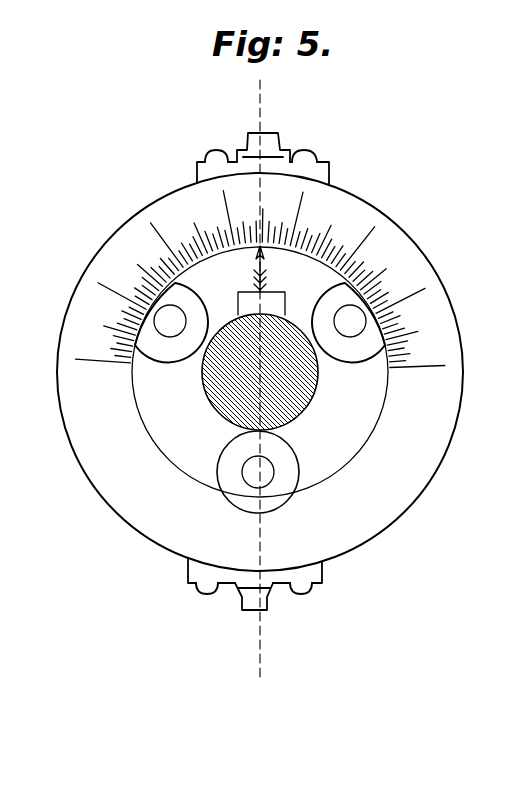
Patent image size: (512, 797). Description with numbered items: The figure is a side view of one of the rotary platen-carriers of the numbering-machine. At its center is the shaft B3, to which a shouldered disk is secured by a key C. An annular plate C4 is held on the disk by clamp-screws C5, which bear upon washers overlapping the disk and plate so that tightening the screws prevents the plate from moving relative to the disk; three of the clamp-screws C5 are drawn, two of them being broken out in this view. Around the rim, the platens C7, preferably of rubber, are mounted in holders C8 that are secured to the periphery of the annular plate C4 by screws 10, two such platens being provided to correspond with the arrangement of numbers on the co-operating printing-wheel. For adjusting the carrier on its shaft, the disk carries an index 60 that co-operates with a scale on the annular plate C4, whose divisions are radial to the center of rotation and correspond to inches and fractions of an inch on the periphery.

The screws 10 is at (224, 151).
The index 60 is at (266, 266).
The shaft B3 is at (206, 393).
The key C is at (285, 298).
The annular plate C4 is at (373, 420).
The clamp-screws C5 is at (196, 298).
The platens C7 is at (285, 135).
The holders C8 is at (333, 173).